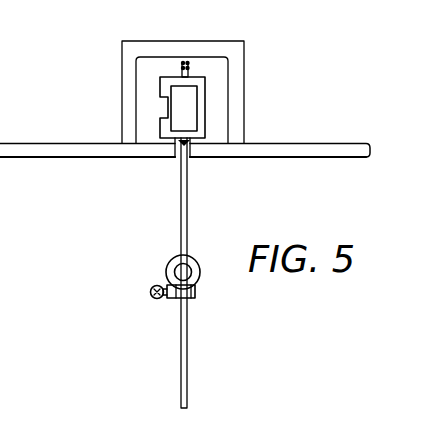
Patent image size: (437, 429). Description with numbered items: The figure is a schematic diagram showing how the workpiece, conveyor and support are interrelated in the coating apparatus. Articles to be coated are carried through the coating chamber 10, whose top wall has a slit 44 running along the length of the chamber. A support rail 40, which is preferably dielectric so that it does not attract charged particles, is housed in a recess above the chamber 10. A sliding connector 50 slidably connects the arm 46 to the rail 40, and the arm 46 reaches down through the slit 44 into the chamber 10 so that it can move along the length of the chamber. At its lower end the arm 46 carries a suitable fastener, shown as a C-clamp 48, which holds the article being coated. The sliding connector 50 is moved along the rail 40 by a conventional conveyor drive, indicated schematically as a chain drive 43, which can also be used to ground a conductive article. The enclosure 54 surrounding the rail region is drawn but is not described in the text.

The coating chamber 10 is at (70, 136).
The support rail 40 is at (168, 105).
The chain drive 43 is at (189, 62).
The slit 44 is at (190, 157).
The arm 46 is at (188, 217).
The C-clamp 48 is at (165, 263).
The sliding connector 50 is at (174, 146).
The housing 54 is at (220, 63).